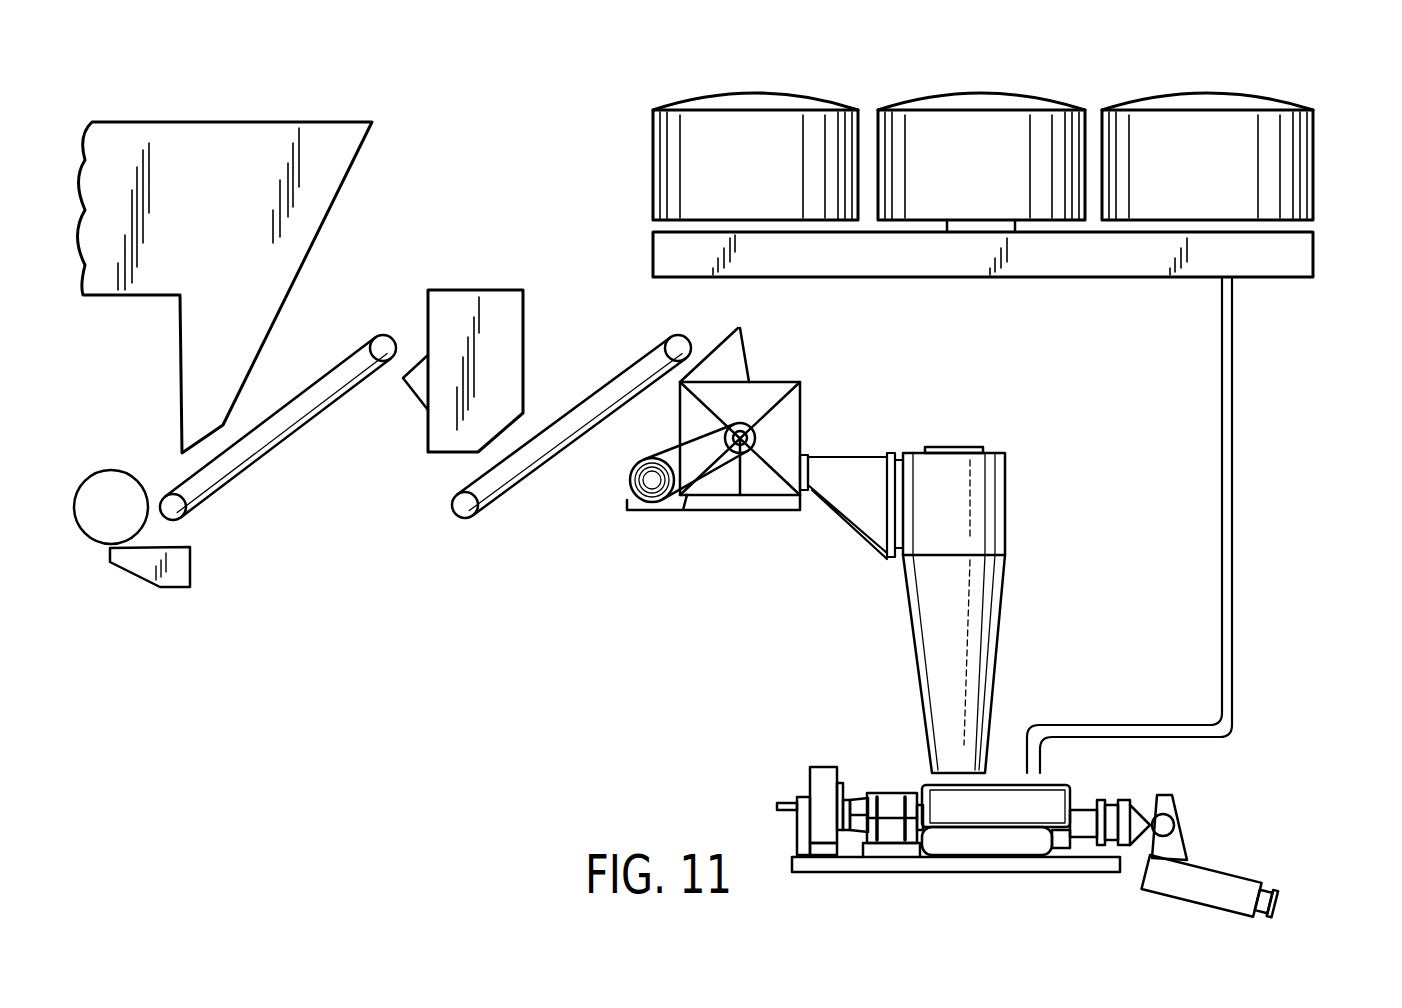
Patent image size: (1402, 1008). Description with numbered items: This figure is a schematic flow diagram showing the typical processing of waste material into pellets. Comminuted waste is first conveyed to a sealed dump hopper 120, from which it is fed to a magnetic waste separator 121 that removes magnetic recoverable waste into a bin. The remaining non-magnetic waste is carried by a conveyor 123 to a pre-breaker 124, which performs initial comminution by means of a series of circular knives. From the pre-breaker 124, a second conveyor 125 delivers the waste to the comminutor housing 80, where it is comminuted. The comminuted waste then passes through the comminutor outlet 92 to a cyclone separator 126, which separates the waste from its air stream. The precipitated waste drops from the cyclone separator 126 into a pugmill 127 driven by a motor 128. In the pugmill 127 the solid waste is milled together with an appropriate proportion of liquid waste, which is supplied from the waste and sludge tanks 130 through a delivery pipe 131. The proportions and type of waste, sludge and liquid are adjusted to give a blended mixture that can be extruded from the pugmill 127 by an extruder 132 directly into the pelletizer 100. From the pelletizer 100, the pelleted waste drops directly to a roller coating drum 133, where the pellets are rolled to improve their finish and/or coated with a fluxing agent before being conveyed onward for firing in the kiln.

The sealed dump hopper 120 is at (232, 162).
The magnetic waste separator 121 is at (99, 487).
The conveyor 123 is at (293, 433).
The pre-breaker 124 is at (485, 297).
The conveyor 125 is at (532, 455).
The comminutor housing 80 is at (757, 405).
The comminutor outlet 92 is at (810, 458).
The cyclone separator 126 is at (977, 585).
The waste and sludge tanks 130 is at (722, 102).
The delivery pipe 131 is at (1222, 377).
The pugmill 127 is at (980, 812).
The motor 128 is at (793, 805).
The extruder 132 is at (1120, 837).
The pelletizer 100 is at (1172, 823).
The roller coating drum 133 is at (1213, 878).